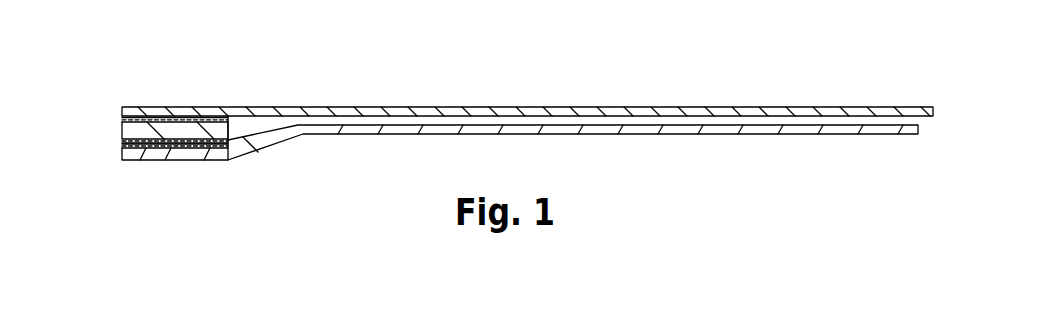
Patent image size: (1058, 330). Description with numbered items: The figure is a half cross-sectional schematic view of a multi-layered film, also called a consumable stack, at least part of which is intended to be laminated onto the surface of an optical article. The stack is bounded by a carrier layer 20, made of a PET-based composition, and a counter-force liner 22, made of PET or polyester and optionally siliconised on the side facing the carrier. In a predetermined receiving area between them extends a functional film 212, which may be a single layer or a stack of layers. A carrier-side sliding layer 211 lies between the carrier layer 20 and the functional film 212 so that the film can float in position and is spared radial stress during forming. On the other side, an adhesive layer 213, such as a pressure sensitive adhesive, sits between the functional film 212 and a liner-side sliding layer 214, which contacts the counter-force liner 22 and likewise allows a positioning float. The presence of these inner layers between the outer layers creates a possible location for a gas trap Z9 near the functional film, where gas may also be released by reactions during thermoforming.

The carrier layer 20 is at (180, 106).
The carrier-side sliding layer 211 is at (135, 117).
The functional film 212 is at (121, 123).
The adhesive layer 213 is at (121, 137).
The liner-side sliding layer 214 is at (121, 148).
The counter-force liner 22 is at (143, 162).
The gas trap Z9 is at (237, 140).